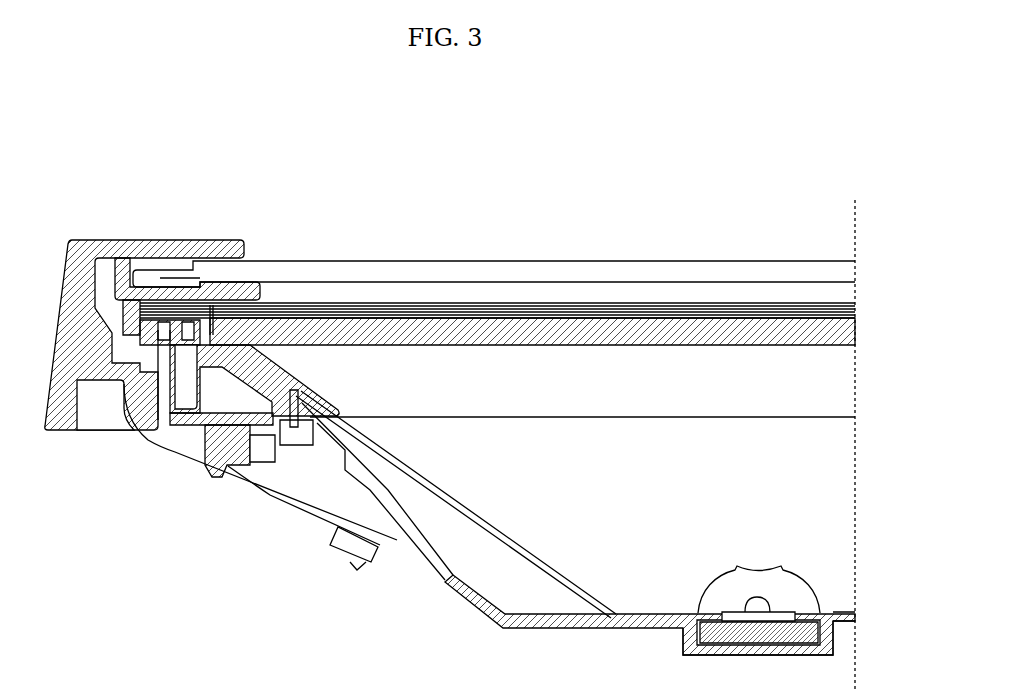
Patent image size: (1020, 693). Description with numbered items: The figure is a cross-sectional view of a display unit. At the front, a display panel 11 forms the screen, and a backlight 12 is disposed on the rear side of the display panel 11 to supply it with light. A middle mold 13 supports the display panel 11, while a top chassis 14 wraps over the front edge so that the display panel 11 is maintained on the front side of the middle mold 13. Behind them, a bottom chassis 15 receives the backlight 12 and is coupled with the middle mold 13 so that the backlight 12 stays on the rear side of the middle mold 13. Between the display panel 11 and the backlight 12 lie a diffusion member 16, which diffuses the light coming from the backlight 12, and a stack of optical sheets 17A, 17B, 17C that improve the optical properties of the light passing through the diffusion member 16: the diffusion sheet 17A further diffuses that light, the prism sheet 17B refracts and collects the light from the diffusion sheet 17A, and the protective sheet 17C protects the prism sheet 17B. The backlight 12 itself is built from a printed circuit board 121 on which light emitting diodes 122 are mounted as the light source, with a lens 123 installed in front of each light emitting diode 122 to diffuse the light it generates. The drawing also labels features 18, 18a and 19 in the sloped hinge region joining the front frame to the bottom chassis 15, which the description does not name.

The display panel 11 is at (371, 262).
The backlight 12 is at (693, 632).
The middle mold 13 is at (111, 283).
The top chassis 14 is at (87, 236).
The bottom chassis 15 is at (490, 628).
The diffusion member 16 is at (855, 335).
The diffusion sheet 17A is at (857, 315).
The prism sheet 17B is at (857, 309).
The protective sheet 17C is at (857, 303).
The hinge arm 18 is at (548, 576).
The lower plate 18a is at (820, 612).
The hinge 19 is at (173, 422).
The printed circuit board 121 is at (792, 648).
The light emitting diode 122 is at (758, 645).
The lens 123 is at (773, 567).